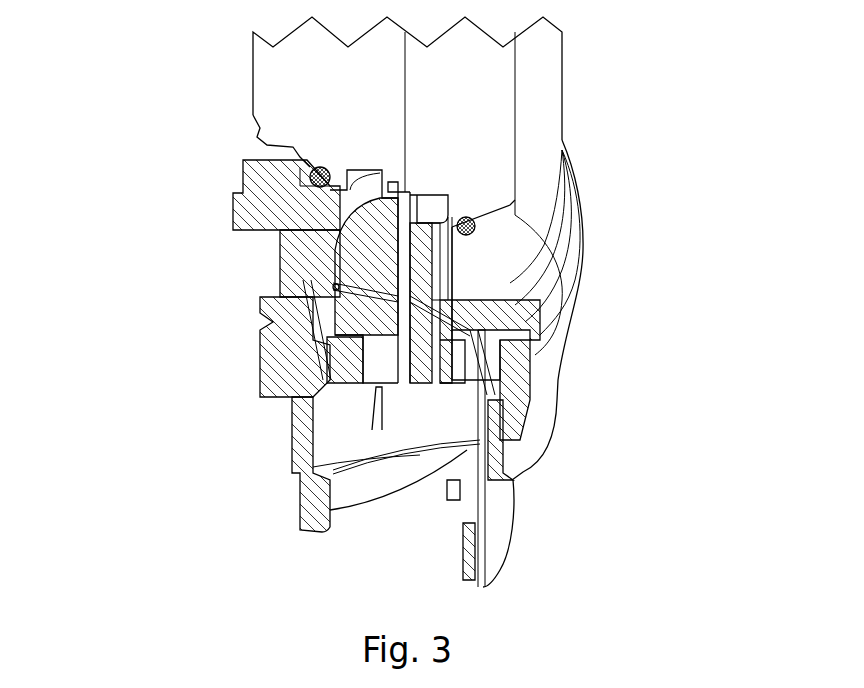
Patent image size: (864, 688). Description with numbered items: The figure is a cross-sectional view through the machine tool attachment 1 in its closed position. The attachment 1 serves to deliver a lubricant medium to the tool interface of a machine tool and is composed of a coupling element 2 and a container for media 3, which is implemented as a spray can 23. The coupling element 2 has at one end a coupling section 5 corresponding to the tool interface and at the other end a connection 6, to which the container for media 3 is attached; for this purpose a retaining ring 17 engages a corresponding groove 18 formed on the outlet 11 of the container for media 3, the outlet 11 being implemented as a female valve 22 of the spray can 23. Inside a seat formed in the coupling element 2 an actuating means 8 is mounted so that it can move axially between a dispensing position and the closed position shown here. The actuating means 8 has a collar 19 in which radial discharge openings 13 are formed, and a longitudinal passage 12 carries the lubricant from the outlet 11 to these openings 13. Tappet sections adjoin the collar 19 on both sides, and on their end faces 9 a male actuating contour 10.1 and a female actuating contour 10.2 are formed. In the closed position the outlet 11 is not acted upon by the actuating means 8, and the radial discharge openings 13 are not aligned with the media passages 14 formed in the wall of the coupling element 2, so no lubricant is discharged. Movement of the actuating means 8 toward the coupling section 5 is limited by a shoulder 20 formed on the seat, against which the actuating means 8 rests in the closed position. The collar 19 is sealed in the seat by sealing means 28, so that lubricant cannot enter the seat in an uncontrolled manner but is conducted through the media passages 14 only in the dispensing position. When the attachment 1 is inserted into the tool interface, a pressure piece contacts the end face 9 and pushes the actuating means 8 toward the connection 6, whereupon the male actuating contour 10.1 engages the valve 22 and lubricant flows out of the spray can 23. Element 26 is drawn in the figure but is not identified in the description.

The machine tool attachment 1 is at (582, 132).
The coupling element 2 is at (277, 387).
The container for media 3 is at (407, 116).
The coupling section 5 is at (303, 498).
The connection 6 is at (433, 225).
The actuating means 8 is at (430, 292).
The end faces 9 is at (483, 258).
The male actuating contour 10.1 is at (412, 207).
The female actuating contour 10.2 is at (408, 382).
The outlet 11 is at (232, 192).
The longitudinal passage 12 is at (403, 247).
The radial discharge openings 13 is at (367, 297).
The media passages 14 is at (313, 302).
The retaining ring 17 is at (313, 173).
The groove 18 is at (338, 186).
The collar 19 is at (443, 350).
The shoulder 20 is at (353, 356).
The valve 22 is at (392, 187).
The spray can 23 is at (507, 120).
The lever 26 is at (333, 283).
The sealing means 28 is at (343, 335).